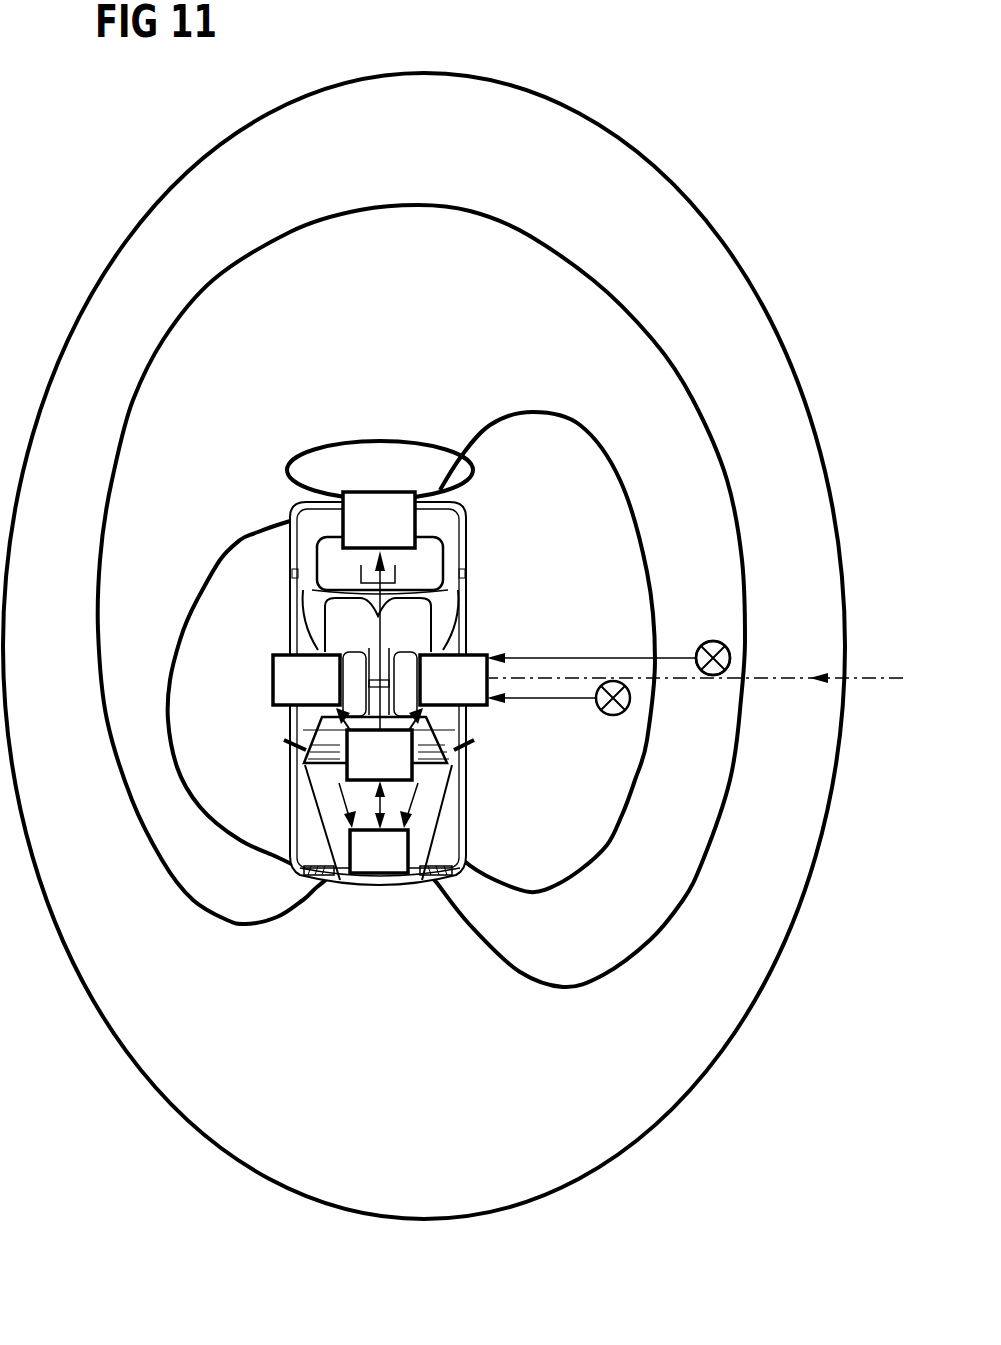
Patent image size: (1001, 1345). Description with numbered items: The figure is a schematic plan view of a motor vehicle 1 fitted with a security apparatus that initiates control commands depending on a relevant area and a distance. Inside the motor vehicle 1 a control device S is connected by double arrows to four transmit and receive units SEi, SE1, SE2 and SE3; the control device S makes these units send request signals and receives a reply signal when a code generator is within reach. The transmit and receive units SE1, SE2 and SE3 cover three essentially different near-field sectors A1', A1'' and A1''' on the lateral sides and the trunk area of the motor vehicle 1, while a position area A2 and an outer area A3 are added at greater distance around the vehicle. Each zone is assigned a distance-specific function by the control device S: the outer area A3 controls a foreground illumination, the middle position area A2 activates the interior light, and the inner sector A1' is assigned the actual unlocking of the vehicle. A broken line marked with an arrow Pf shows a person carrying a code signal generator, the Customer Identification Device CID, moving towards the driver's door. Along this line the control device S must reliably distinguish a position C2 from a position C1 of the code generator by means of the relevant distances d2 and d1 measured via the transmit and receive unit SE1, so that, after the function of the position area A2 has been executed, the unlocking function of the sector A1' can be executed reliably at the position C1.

The motor vehicle 1 is at (381, 905).
The outer area A3 is at (424, 646).
The position area A2 is at (421, 596).
The near-field sector A1' is at (547, 652).
The near-field sector A1'' is at (241, 696).
The near-field sector A1''' is at (380, 470).
The transmit and receive unit SE1 is at (453, 681).
The transmit and receive unit SE2 is at (306, 681).
The transmit and receive unit SE3 is at (379, 521).
The transmit and receive unit SEi is at (379, 755).
The control device S is at (379, 850).
The Customer Identification Device CID is at (711, 641).
The position of code generator C1 is at (613, 716).
The position of code generator C2 is at (712, 676).
The distance d1 is at (541, 721).
The distance d2 is at (591, 640).
The arrow Pf is at (696, 662).